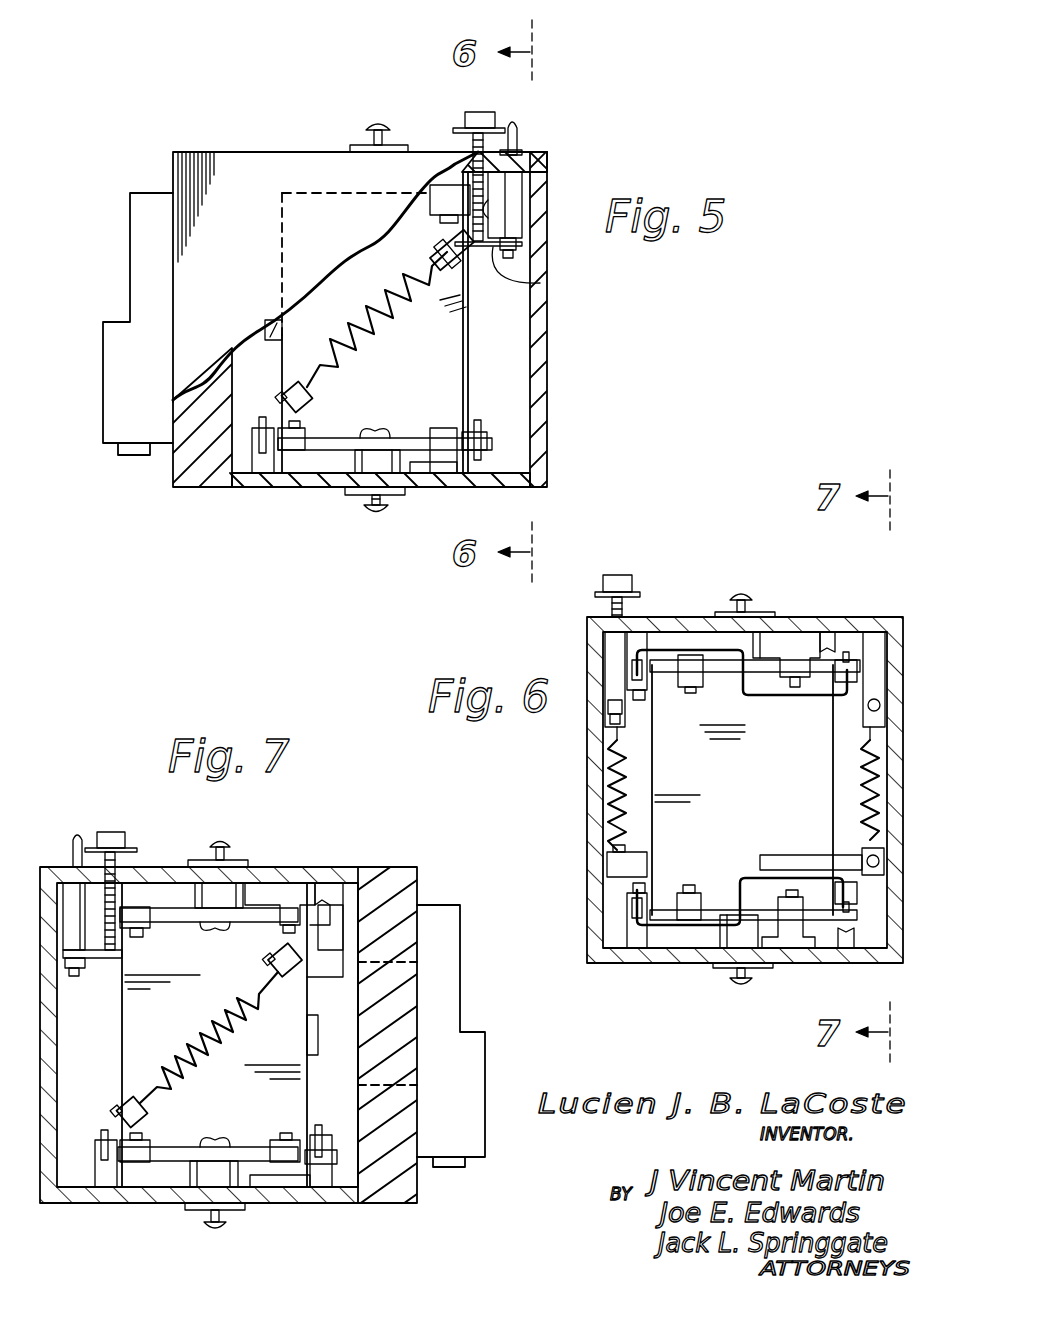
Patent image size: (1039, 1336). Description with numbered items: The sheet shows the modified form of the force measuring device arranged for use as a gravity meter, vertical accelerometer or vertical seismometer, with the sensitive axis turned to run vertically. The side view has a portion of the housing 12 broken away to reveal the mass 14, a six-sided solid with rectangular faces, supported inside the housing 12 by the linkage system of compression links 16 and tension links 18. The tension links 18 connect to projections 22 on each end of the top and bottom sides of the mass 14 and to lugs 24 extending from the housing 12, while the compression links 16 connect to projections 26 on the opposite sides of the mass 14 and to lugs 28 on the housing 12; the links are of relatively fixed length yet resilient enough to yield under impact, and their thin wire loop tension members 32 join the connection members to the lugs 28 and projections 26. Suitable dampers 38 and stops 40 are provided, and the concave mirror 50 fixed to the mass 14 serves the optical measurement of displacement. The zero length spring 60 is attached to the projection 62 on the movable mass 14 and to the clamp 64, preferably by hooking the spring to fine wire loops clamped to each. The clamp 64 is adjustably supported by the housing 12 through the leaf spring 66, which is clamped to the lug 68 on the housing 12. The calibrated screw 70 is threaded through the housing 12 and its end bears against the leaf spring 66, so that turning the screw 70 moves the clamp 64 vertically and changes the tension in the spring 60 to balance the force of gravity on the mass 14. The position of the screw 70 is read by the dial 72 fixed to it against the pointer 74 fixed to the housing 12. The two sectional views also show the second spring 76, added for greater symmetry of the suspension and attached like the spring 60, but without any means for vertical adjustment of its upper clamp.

In FIG. 5, the housing 12 is at (547, 362).
In FIG. 6, the housing 12 is at (800, 632).
In FIG. 7, the housing 12 is at (310, 867).
In FIG. 5, the mass 14 is at (470, 355).
In FIG. 6, the mass 14 is at (752, 757).
In FIG. 7, the mass 14 is at (307, 997).
In FIG. 5, the compression links 16 is at (470, 448).
In FIG. 6, the compression links 16 is at (640, 670).
In FIG. 5, the tension links 18 is at (445, 195).
In FIG. 6, the tension links 18 is at (755, 790).
In FIG. 7, the tension links 18 is at (168, 908).
In FIG. 5, the projections 22 is at (293, 445).
In FIG. 5, the lugs 24 is at (256, 455).
In FIG. 7, the lugs 24 is at (216, 1156).
In FIG. 6, the projections 26 is at (690, 660).
In FIG. 6, the lugs 28 is at (795, 632).
In FIG. 6, the tension members 32 is at (820, 665).
In FIG. 5, the dampers 38 is at (355, 462).
In FIG. 7, the dampers 38 is at (185, 922).
In FIG. 5, the stops 40 is at (376, 515).
In FIG. 7, the stops 40 is at (228, 848).
In FIG. 7, the concave mirror 50 is at (318, 1035).
In FIG. 5, the spring 60 is at (382, 322).
In FIG. 6, the spring 60 is at (608, 786).
In FIG. 5, the projection 62 is at (309, 395).
In FIG. 6, the projection 62 is at (607, 862).
In FIG. 5, the clamp 64 is at (455, 262).
In FIG. 6, the clamp 64 is at (605, 710).
In FIG. 5, the leaf spring 66 is at (540, 283).
In FIG. 7, the leaf spring 66 is at (95, 960).
In FIG. 5, the lug 68 is at (512, 213).
In FIG. 7, the lug 68 is at (74, 976).
In FIG. 5, the calibrated screw 70 is at (525, 180).
In FIG. 6, the calibrated screw 70 is at (625, 600).
In FIG. 7, the calibrated screw 70 is at (118, 870).
In FIG. 5, the dial 72 is at (495, 118).
In FIG. 7, the dial 72 is at (100, 848).
In FIG. 5, the pointer 74 is at (517, 135).
In FIG. 7, the pointer 74 is at (73, 850).
In FIG. 6, the second spring 76 is at (862, 783).
In FIG. 7, the second spring 76 is at (190, 1040).